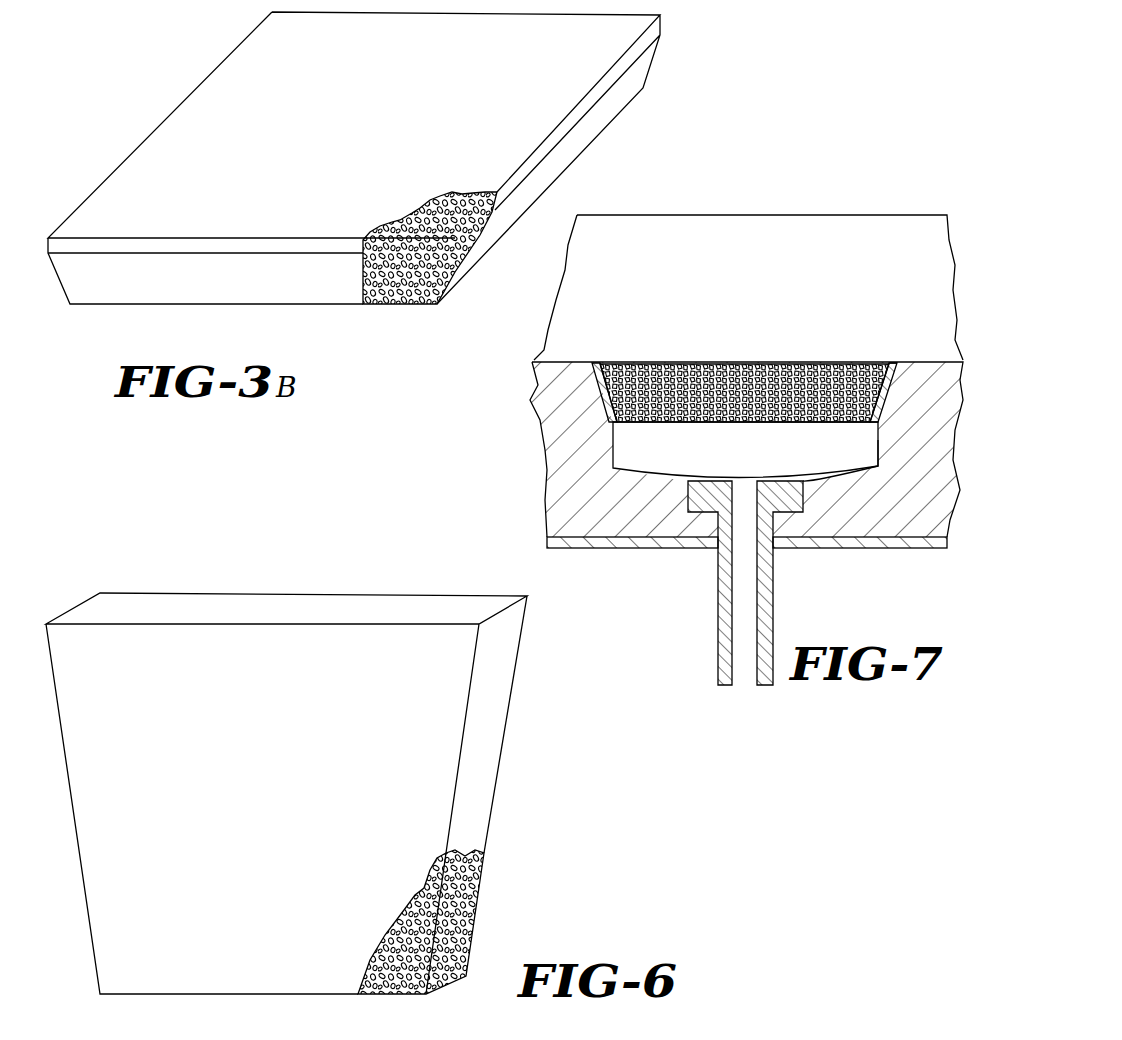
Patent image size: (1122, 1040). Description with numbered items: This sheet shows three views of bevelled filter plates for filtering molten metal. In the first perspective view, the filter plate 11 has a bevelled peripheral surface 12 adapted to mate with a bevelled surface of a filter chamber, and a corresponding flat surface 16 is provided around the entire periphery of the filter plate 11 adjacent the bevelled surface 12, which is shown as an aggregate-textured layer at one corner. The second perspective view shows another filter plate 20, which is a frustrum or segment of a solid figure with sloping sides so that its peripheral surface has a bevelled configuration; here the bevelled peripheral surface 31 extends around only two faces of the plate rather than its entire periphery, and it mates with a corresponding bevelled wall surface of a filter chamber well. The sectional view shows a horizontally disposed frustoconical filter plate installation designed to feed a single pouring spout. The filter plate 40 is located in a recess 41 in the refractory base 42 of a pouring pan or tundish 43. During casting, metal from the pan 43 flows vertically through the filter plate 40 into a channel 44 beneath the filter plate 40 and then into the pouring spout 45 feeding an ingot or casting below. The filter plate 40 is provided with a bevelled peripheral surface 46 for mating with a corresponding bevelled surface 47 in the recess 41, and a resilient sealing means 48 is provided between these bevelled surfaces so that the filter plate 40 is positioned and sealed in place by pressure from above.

In FIG. 3B, the filter plate 11 is at (340, 149).
In FIG. 3B, the flat surface 16 is at (126, 249).
In FIG. 3B, the bevelled peripheral surface 12 is at (335, 283).
In FIG. 6, the filter plate 20 is at (318, 781).
In FIG. 6, the bevelled peripheral surface 31 is at (477, 794).
In FIG. 7, the filter plate 40 is at (728, 373).
In FIG. 7, the recess 41 is at (594, 384).
In FIG. 7, the refractory base 42 is at (560, 452).
In FIG. 7, the pouring pan or tundish 43 is at (711, 293).
In FIG. 7, the channel 44 is at (756, 461).
In FIG. 7, the pouring spout 45 is at (747, 607).
In FIG. 7, the bevelled peripheral surface 46 is at (878, 382).
In FIG. 7, the bevelled surface 47 is at (893, 370).
In FIG. 7, the resilient sealing means 48 is at (873, 428).